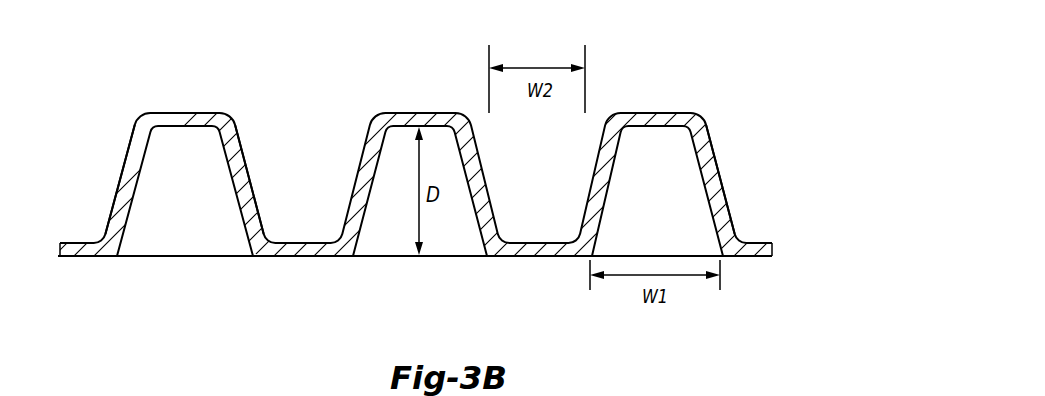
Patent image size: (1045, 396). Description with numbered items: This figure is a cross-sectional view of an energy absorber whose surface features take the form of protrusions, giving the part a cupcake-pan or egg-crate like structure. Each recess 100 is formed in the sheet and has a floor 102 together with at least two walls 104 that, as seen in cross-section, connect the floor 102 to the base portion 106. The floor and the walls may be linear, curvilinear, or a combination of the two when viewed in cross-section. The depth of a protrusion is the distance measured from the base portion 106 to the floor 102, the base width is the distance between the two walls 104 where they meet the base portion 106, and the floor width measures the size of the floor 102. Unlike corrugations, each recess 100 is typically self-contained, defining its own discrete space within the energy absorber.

The recess 100 is at (410, 113).
The floor 102 is at (185, 127).
The walls 104 is at (121, 178).
The base portion 106 is at (290, 258).